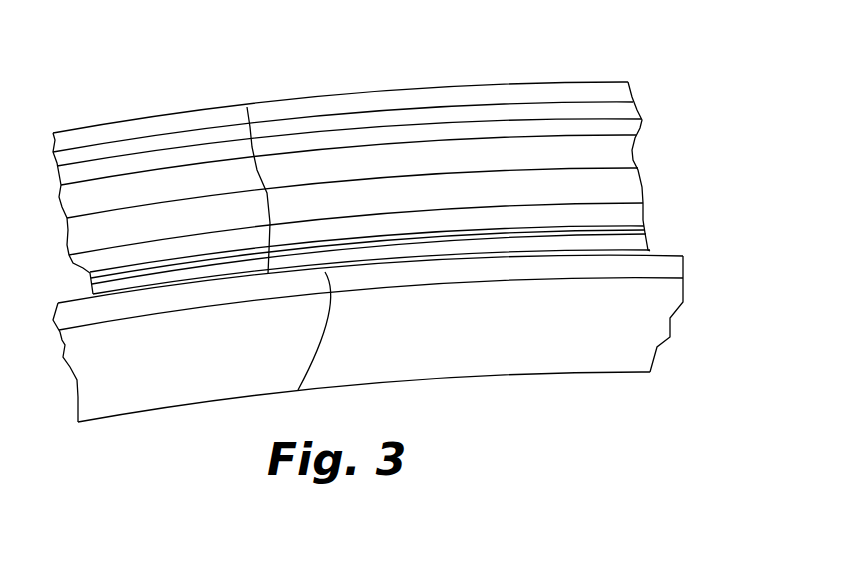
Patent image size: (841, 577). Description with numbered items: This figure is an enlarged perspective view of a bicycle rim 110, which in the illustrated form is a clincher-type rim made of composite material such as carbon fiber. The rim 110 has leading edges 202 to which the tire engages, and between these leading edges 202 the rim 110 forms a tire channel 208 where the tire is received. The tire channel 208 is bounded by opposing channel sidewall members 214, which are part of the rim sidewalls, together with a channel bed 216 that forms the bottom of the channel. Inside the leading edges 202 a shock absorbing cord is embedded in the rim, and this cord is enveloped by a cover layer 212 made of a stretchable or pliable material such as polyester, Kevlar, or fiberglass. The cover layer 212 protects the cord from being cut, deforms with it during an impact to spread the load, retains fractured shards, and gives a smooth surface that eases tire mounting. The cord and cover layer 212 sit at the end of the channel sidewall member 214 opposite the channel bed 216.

The rim 110 is at (500, 355).
The leading edge 202 is at (212, 295).
The tire channel 208 is at (335, 195).
The cover layer 212 is at (673, 266).
The channel sidewall member 214 is at (598, 127).
The channel bed 216 is at (615, 243).